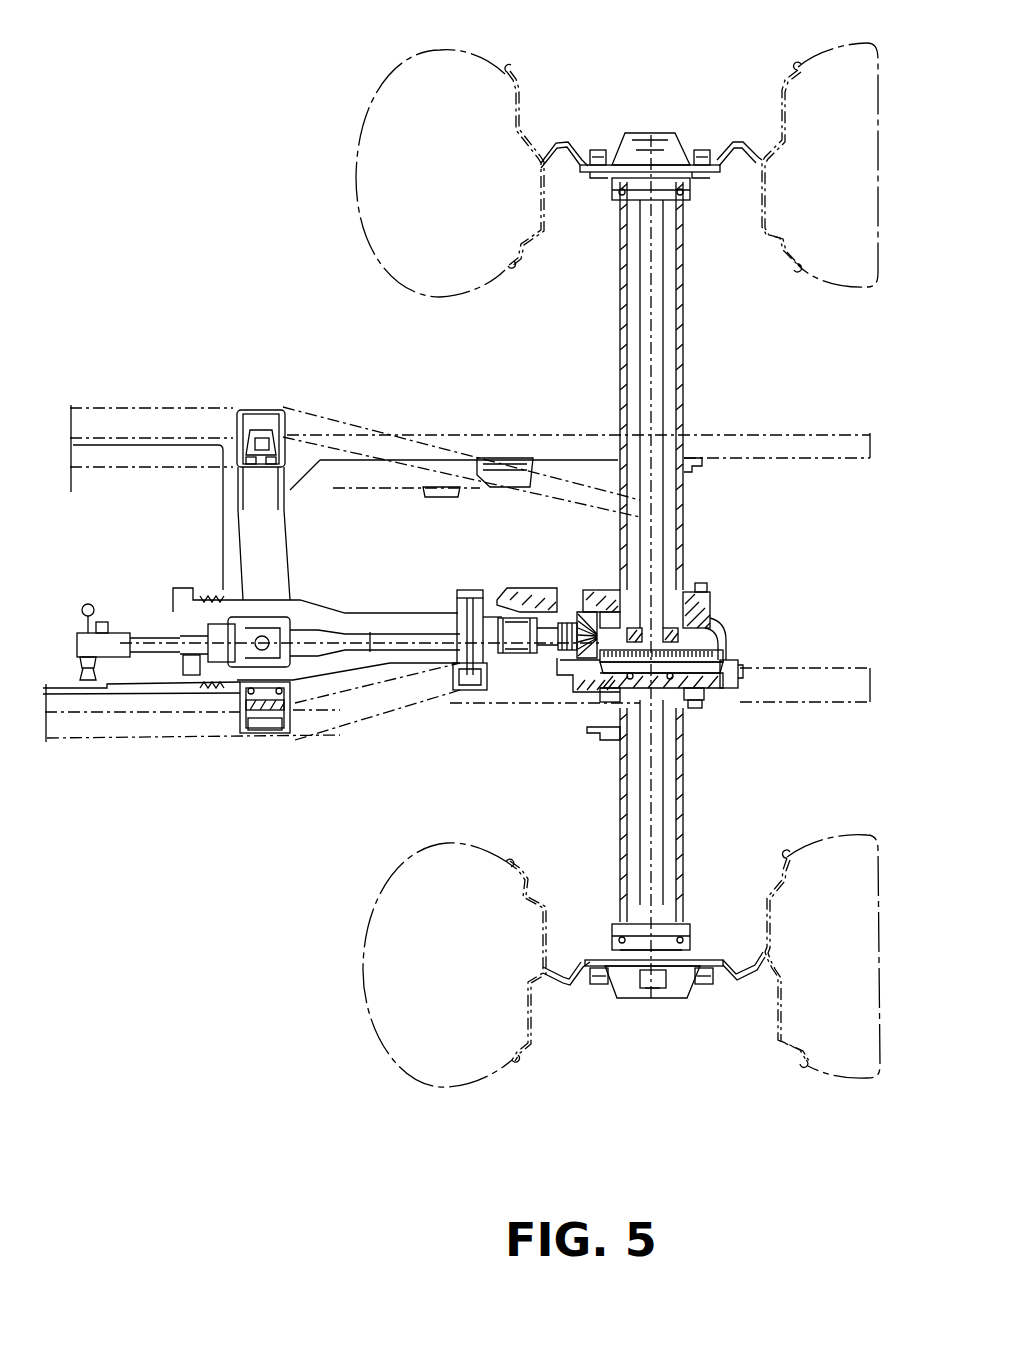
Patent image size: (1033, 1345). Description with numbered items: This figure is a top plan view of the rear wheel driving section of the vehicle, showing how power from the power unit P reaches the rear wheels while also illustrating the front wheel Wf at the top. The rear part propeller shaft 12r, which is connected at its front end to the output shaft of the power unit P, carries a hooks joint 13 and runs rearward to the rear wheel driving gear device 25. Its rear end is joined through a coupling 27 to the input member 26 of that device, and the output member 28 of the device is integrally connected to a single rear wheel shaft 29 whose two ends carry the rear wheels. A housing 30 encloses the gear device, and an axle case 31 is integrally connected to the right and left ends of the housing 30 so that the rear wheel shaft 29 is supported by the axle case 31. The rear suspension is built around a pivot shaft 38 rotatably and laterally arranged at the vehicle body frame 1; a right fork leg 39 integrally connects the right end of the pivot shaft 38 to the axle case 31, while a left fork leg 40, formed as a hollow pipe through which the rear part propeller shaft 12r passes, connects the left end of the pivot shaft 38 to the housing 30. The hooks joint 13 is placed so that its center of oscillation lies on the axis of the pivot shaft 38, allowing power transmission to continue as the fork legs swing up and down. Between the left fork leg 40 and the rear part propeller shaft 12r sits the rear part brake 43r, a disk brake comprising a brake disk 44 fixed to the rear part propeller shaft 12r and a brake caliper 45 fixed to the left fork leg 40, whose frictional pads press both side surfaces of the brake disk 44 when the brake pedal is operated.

The front wheel Wf is at (380, 92).
The axle case 31 is at (683, 312).
The rear wheel shaft 29 is at (660, 778).
The vehicle body frame 1 is at (806, 432).
The power unit P is at (145, 440).
The pivot shaft 38 is at (276, 535).
The hooks joint 13 is at (285, 620).
The rear part propeller shaft 12r is at (398, 632).
The right fork leg 39 is at (468, 480).
The rear part brake 43r is at (474, 594).
The brake caliper 45 is at (460, 692).
The brake disk 44 is at (505, 600).
The coupling 27 is at (517, 657).
The input member 26 is at (567, 633).
The rear wheel driving gear device 25 is at (727, 620).
The housing 30 is at (727, 645).
The output member 28 is at (650, 642).
The left fork leg 40 is at (300, 685).